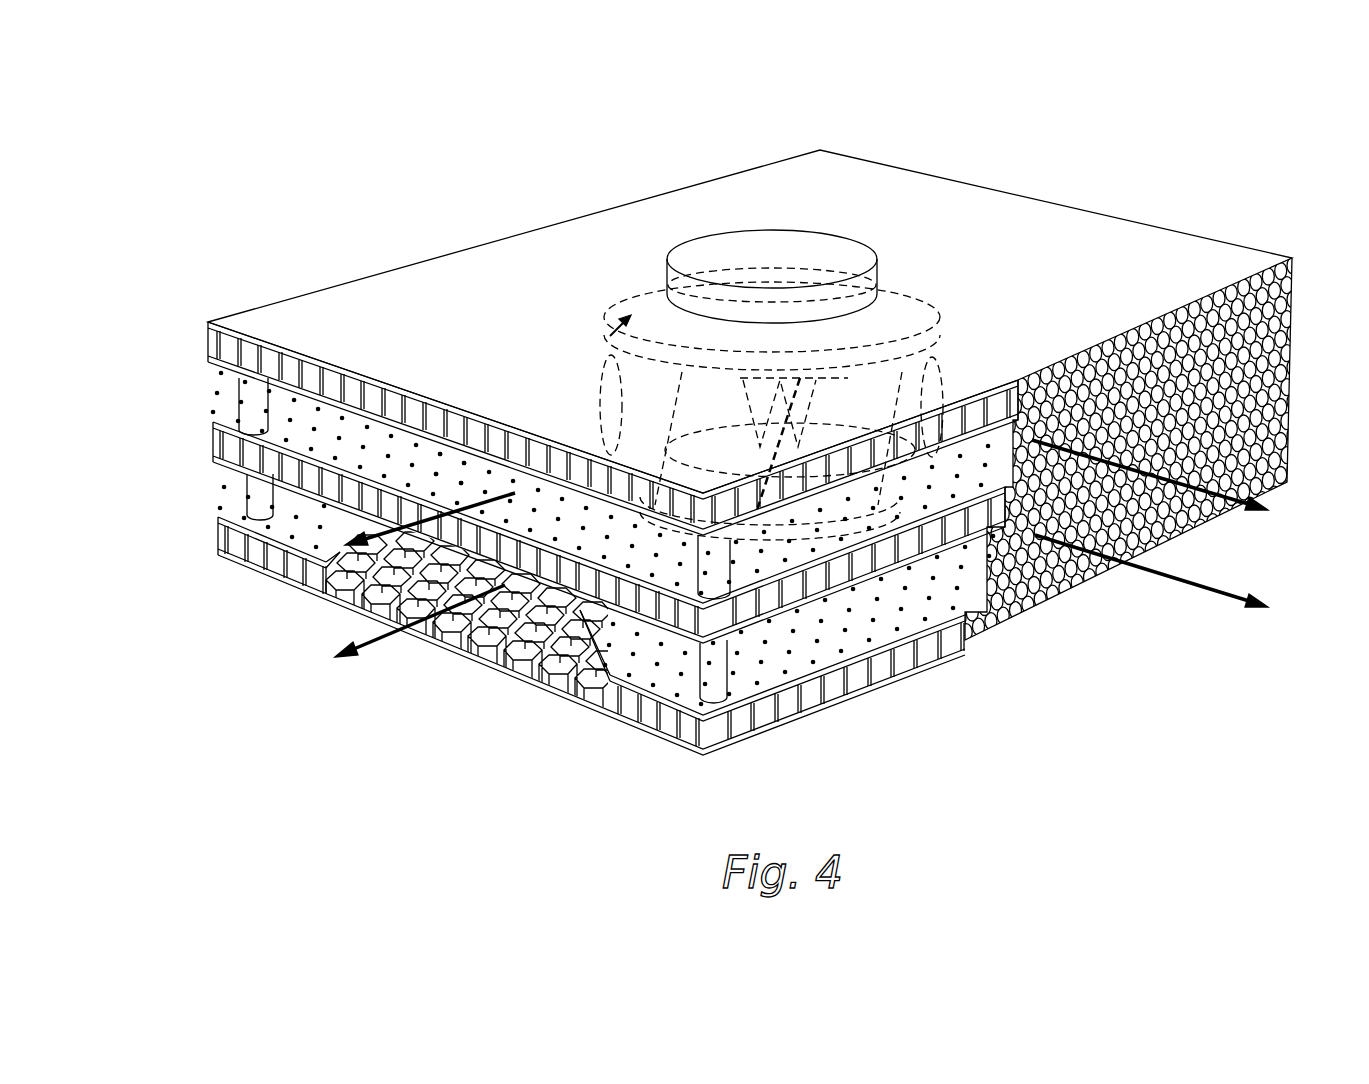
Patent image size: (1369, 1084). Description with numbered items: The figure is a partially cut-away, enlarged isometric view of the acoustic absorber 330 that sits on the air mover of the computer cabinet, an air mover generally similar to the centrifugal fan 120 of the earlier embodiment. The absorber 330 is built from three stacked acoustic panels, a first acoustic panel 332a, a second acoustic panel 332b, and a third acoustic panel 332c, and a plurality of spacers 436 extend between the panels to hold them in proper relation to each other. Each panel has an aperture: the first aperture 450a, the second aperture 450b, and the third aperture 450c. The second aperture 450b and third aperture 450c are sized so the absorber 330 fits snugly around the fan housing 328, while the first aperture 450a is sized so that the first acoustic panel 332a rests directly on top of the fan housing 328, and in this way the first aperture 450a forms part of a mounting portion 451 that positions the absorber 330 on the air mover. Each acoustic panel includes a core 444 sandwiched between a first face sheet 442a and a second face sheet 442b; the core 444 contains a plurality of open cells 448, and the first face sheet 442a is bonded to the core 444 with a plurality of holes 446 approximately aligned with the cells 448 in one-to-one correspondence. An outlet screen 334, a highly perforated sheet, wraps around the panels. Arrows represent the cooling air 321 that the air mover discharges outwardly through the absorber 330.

The acoustic absorber 330 is at (1090, 172).
The centrifugal fan 120 is at (792, 253).
The fan housing 328 is at (908, 315).
The first aperture 450a is at (682, 307).
The second aperture 450b is at (628, 360).
The third aperture 450c is at (652, 412).
The mounting portion 451 is at (610, 334).
The cooling air 321 is at (335, 520).
The outlet screen 334 is at (1290, 448).
The first acoustic panel 332a is at (210, 343).
The second acoustic panel 332b is at (215, 438).
The third acoustic panel 332c is at (1000, 383).
The holes 446 is at (310, 444).
The open cells 448 is at (440, 540).
The core 444 is at (345, 540).
The first face sheet 442a is at (540, 658).
The second face sheet 442b is at (640, 628).
The spacers 436 is at (720, 683).